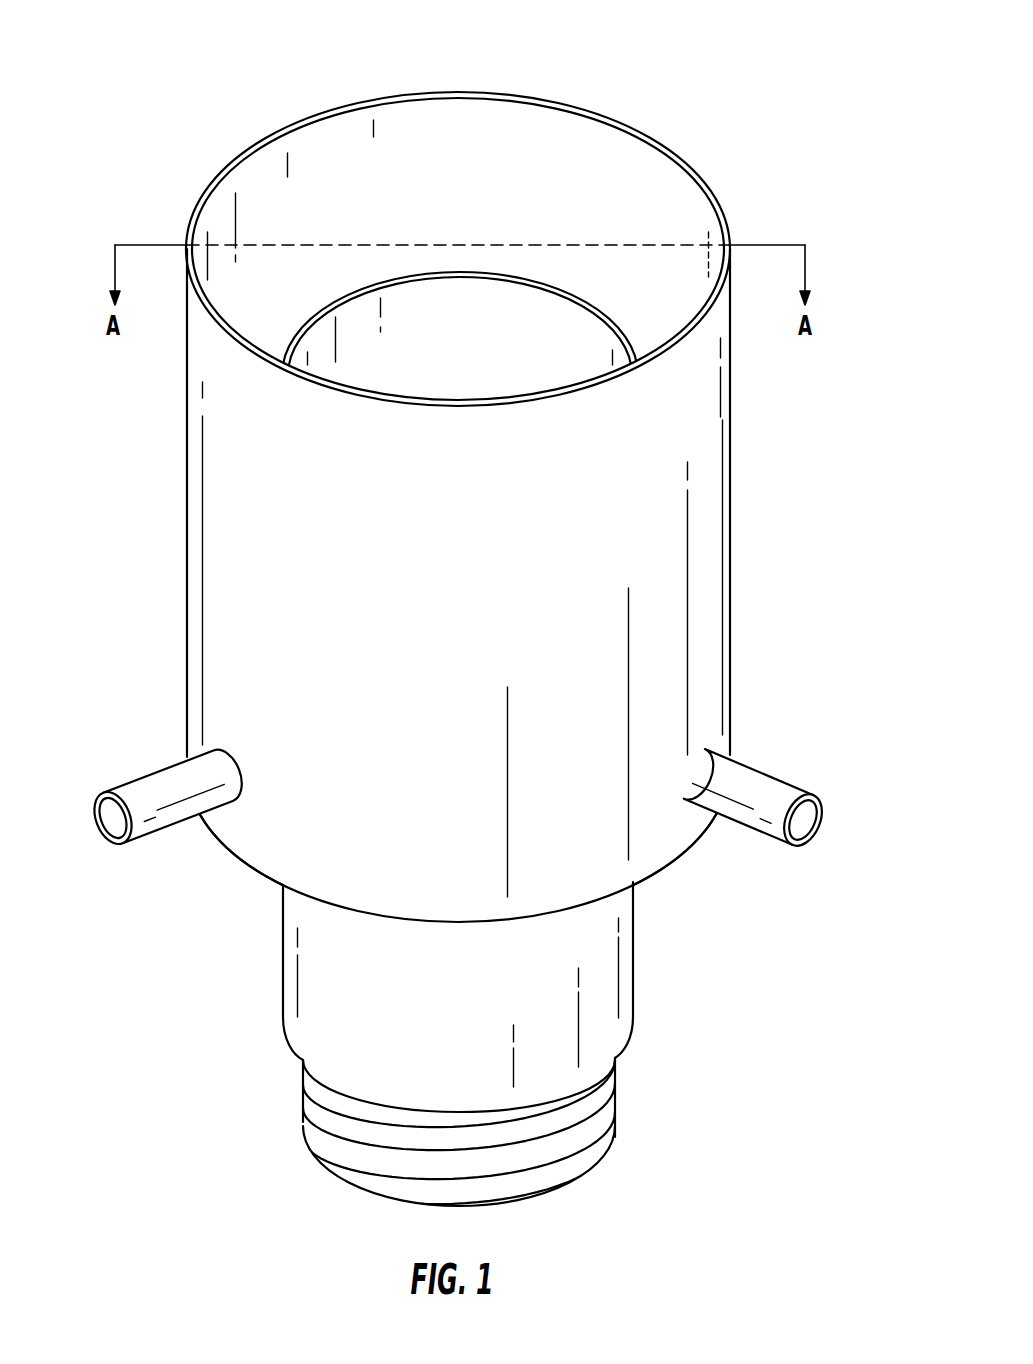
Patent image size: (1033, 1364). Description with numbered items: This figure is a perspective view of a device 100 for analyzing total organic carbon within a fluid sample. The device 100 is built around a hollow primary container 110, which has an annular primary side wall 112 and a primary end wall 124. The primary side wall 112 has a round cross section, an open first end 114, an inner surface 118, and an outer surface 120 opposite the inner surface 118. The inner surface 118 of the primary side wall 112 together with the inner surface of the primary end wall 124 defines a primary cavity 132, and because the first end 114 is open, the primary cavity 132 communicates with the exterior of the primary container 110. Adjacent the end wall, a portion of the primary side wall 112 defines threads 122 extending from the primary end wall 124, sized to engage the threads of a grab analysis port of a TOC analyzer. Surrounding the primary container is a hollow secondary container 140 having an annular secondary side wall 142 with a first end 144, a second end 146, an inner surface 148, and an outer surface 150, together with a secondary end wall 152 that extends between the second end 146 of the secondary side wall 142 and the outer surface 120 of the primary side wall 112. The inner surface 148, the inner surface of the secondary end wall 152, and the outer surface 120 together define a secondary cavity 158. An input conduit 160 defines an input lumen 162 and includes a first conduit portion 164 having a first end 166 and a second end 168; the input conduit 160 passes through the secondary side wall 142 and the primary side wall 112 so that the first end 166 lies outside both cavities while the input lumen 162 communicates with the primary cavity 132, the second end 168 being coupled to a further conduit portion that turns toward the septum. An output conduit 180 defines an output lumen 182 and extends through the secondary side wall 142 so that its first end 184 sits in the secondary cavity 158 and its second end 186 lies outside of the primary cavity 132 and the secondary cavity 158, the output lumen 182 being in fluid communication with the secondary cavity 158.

The device 100 is at (788, 95).
The primary container 110 is at (497, 262).
The primary side wall 112 is at (336, 300).
The first end 114 is at (412, 272).
The inner surface 118 is at (531, 330).
The outer surface 120 is at (602, 308).
The threads 122 is at (615, 1103).
The primary end wall 124 is at (621, 1042).
The primary cavity 132 is at (432, 335).
The secondary container 140 is at (735, 507).
The secondary side wall 142 is at (670, 583).
The first end 144 is at (214, 184).
The second end 146 is at (682, 858).
The inner surface 148 is at (340, 153).
The outer surface 150 is at (194, 484).
The secondary end wall 152 is at (253, 866).
The secondary cavity 158 is at (490, 140).
The input conduit 160 is at (751, 787).
The input lumen 162 is at (805, 817).
The first conduit portion 164 is at (740, 777).
The first end 166 is at (800, 850).
The second end 168 is at (683, 762).
The output conduit 180 is at (177, 791).
The output lumen 182 is at (112, 817).
The first end 184 is at (236, 763).
The second end 186 is at (108, 838).